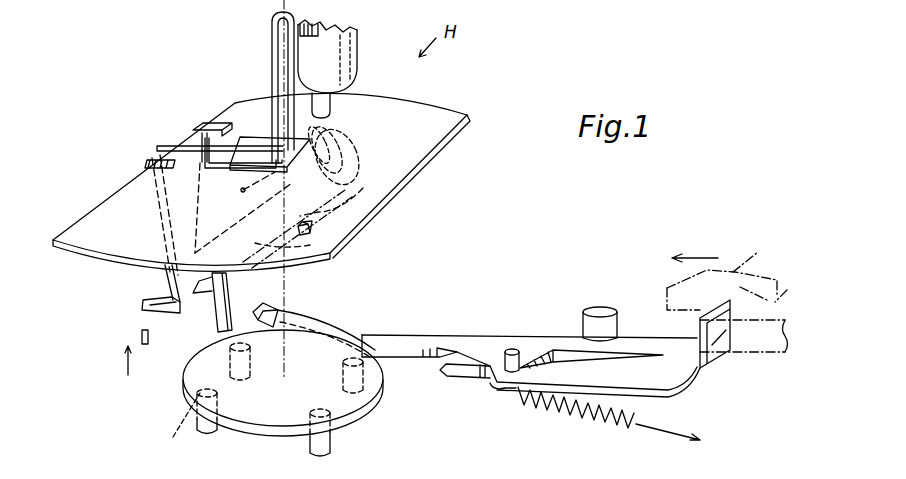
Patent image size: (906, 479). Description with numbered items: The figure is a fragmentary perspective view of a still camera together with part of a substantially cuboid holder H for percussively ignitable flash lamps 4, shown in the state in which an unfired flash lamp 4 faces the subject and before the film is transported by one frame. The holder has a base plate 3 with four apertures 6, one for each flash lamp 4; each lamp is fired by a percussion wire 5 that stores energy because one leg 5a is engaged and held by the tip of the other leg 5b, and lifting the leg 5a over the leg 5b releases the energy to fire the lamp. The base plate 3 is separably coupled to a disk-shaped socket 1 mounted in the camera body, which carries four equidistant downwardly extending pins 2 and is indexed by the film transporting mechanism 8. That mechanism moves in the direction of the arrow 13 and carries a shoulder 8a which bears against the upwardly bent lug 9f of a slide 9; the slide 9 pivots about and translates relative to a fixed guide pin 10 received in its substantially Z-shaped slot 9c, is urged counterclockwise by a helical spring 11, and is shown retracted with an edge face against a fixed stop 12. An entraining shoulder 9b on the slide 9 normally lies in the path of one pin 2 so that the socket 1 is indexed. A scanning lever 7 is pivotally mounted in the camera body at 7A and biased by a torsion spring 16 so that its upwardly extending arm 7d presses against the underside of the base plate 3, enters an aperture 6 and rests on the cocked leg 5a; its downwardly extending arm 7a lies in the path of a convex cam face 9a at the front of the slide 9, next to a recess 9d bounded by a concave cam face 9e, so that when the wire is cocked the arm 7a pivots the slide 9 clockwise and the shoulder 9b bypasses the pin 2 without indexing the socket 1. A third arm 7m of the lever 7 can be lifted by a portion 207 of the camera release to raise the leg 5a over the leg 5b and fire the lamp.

The disk-shaped socket 1 is at (270, 430).
The pins 2 is at (330, 443).
The base plate 3 is at (87, 263).
The flash lamp 4 is at (357, 56).
The percussion wire 5 is at (269, 54).
The leg 5a is at (163, 143).
The leg 5b is at (217, 165).
The aperture 6 is at (188, 131).
The scanning lever 7 is at (310, 233).
The pivot 7A is at (357, 155).
The downwardly extending arm 7a is at (213, 318).
The upwardly extending arm 7d is at (166, 205).
The third arm 7m is at (143, 303).
The film transporting mechanism 8 is at (727, 292).
The shoulder 8a is at (794, 288).
The slide 9 is at (462, 337).
The convex cam face 9a is at (280, 312).
The entraining shoulder 9b is at (440, 372).
The Z-shaped slot 9c is at (565, 350).
The recess 9d is at (373, 336).
The concave cam face 9e is at (320, 318).
The upwardly bent lug 9f is at (720, 340).
The guide pin 10 is at (515, 348).
The helical spring 11 is at (579, 418).
The fixed stop 12 is at (603, 309).
The arrow 13 is at (698, 257).
The torsion spring 16 is at (347, 195).
The portion of camera release 207 is at (137, 330).